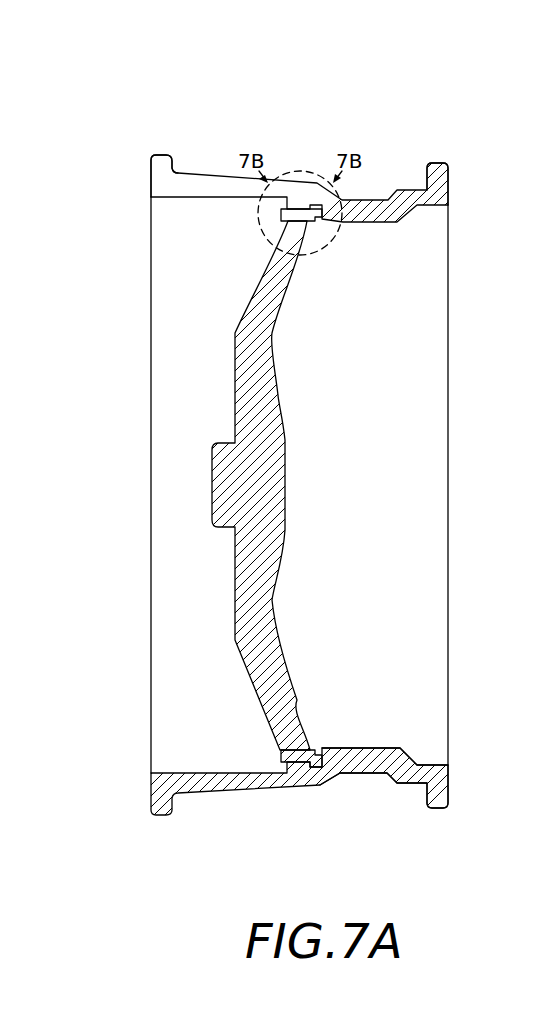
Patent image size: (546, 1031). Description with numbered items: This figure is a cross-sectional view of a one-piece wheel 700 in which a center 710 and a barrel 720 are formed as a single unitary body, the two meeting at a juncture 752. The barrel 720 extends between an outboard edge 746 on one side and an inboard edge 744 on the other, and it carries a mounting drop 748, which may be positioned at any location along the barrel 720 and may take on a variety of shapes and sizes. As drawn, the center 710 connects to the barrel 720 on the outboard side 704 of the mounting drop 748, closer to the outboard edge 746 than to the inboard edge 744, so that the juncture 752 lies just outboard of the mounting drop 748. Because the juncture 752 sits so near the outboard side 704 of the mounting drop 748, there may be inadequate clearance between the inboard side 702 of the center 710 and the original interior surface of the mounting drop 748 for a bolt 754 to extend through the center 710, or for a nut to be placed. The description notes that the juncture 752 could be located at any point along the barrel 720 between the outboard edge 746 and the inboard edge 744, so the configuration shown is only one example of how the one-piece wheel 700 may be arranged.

The one-piece wheel 700 is at (169, 89).
The barrel 720 is at (235, 131).
The outboard edge 746 is at (151, 252).
The inboard edge 744 is at (448, 270).
The mounting drop 748 is at (363, 790).
The center 710 is at (184, 573).
The juncture 752 is at (295, 790).
The outboard side 704 is at (132, 481).
The inboard side 702 is at (512, 481).
The bolt 754 is at (528, 378).